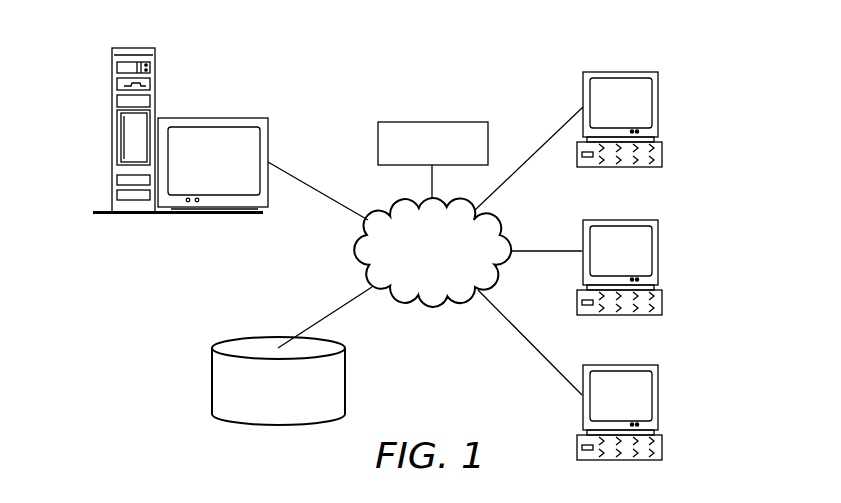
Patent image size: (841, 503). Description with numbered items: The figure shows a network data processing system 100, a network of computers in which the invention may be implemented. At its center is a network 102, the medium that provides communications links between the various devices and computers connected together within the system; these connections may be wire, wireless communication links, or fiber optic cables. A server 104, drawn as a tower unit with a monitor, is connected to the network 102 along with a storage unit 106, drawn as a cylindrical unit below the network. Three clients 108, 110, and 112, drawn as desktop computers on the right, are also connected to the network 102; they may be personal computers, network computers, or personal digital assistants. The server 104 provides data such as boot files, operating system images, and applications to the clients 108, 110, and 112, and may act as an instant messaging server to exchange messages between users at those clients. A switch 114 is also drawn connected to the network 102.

The network data processing system 100 is at (485, 86).
The network 102 is at (352, 258).
The server 104 is at (112, 133).
The storage unit 106 is at (212, 378).
The client 108 is at (658, 103).
The client 110 is at (657, 253).
The client 112 is at (656, 395).
The switch 114 is at (422, 121).